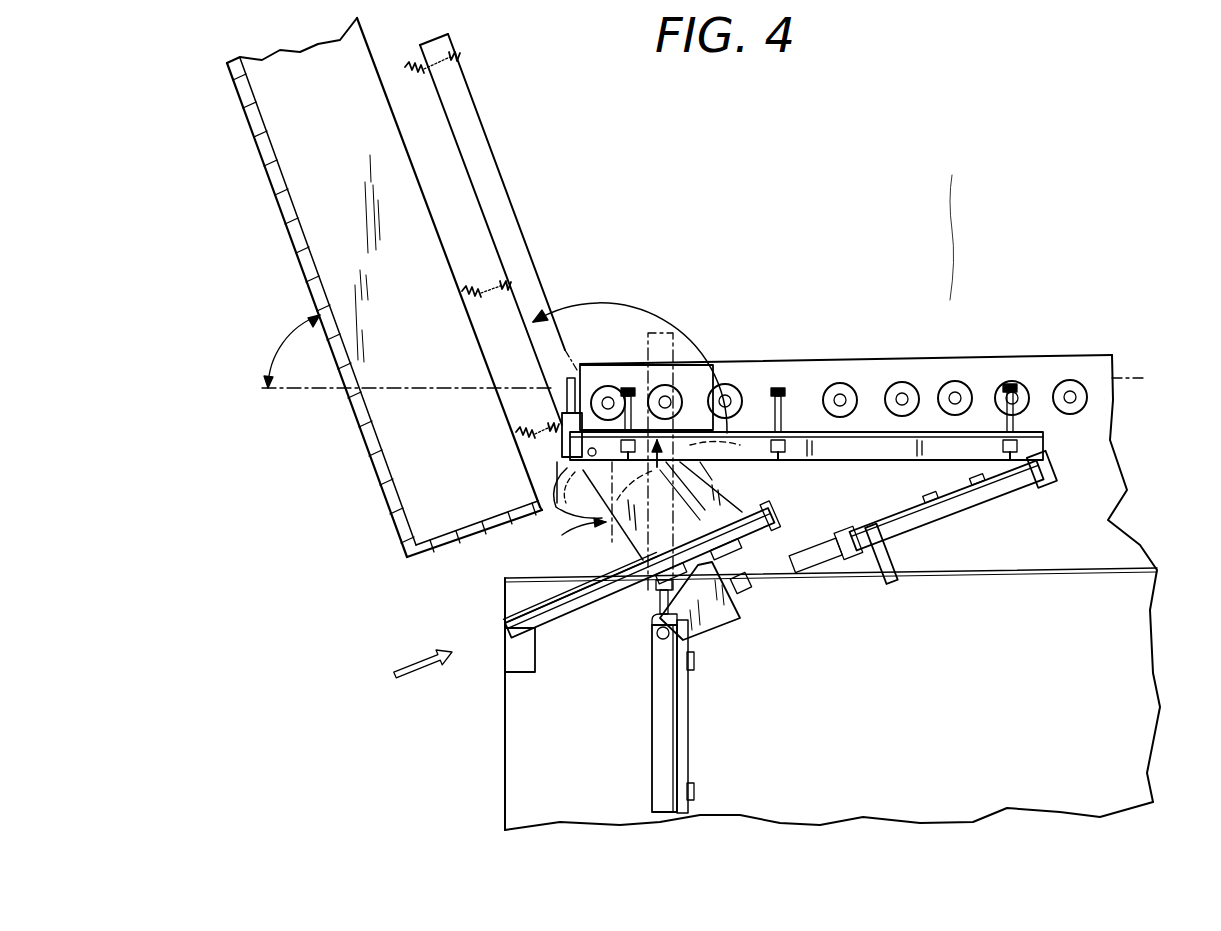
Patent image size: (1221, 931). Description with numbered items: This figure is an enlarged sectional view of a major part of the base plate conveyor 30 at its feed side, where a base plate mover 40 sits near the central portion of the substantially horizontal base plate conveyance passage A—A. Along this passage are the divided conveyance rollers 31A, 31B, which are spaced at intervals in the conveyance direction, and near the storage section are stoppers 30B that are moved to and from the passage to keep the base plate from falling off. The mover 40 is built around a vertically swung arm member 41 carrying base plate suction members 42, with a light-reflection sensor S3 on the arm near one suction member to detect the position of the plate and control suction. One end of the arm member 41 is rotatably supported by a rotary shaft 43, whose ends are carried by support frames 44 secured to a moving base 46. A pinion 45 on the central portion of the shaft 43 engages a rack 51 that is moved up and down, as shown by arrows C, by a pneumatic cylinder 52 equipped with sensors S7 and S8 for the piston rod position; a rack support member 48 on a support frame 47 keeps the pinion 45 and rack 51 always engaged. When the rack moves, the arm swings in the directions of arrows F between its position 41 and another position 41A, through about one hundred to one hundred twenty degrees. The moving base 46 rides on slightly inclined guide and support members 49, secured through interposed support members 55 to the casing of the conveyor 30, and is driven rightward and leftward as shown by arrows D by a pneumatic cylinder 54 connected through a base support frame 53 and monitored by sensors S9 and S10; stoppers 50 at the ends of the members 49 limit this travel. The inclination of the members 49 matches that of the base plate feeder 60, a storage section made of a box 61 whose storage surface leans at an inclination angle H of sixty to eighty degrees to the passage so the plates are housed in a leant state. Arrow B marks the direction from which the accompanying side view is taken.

The base plate conveyor 30 is at (1208, 446).
The stopper 30B is at (570, 382).
The divided conveyance roller 31A is at (902, 385).
The divided conveyance roller 31B is at (955, 385).
The base plate mover 40 is at (870, 428).
The vertically swung arm member 41 is at (838, 460).
The swung position of the arm member 41A is at (507, 180).
The base plate suction member 42 is at (628, 388).
The rotary shaft 43 is at (588, 452).
The support frame 44 is at (620, 525).
The pinion 45 is at (557, 507).
The moving base 46 is at (648, 560).
The support frame 47 is at (722, 500).
The rack support member 48 is at (700, 442).
The guide and support member 49 is at (583, 612).
The stopper 50 is at (775, 515).
The rack 51 is at (700, 470).
The pneumatic cylinder 52 is at (652, 722).
The base support frame 53 is at (705, 638).
The pneumatic cylinder 54 is at (940, 520).
The support member 55 is at (770, 585).
The base plate feeder 60 is at (228, 77).
The box 61 is at (293, 245).
The sensor S3 is at (683, 437).
The sensor S7 is at (694, 663).
The sensor S8 is at (695, 790).
The sensor S9 is at (947, 490).
The sensor S10 is at (990, 470).
The base plate conveyance passage A is at (713, 383).
The arrow B is at (412, 670).
The arrow C is at (642, 503).
The arrow D is at (574, 534).
The arrow F is at (654, 440).
The inclination angle H is at (289, 351).